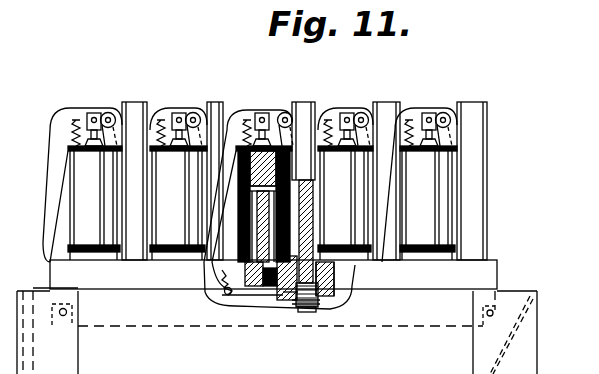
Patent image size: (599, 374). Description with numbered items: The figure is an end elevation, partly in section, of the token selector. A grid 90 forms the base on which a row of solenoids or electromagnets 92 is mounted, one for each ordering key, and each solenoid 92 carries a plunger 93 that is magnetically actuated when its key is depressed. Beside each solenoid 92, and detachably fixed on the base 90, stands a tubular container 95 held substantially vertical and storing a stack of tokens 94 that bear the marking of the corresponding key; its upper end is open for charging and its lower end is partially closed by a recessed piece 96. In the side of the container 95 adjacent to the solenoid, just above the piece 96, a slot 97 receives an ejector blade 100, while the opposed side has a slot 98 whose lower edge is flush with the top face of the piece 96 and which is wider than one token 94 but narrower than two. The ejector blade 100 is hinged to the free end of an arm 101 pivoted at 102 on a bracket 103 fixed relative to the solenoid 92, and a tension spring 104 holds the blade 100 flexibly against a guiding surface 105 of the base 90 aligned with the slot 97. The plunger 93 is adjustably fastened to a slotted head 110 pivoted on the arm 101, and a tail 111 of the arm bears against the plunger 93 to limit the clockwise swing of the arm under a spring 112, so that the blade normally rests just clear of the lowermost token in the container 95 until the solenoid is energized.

The grid 90 is at (338, 290).
The solenoid 92 is at (83, 198).
The plunger 93 is at (75, 133).
The token 94 is at (325, 279).
The container 95 is at (332, 97).
The recessed piece 96 is at (302, 312).
The slot 97 is at (292, 305).
The slot 98 is at (320, 292).
The ejector blade 100 is at (238, 300).
The arm 101 is at (57, 168).
The pivot 102 is at (278, 128).
The bracket 103 is at (286, 112).
The spring 104 is at (210, 290).
The guiding surface 105 is at (290, 297).
The slotted head 110 is at (256, 117).
The tail 111 is at (292, 127).
The spring 112 is at (244, 136).